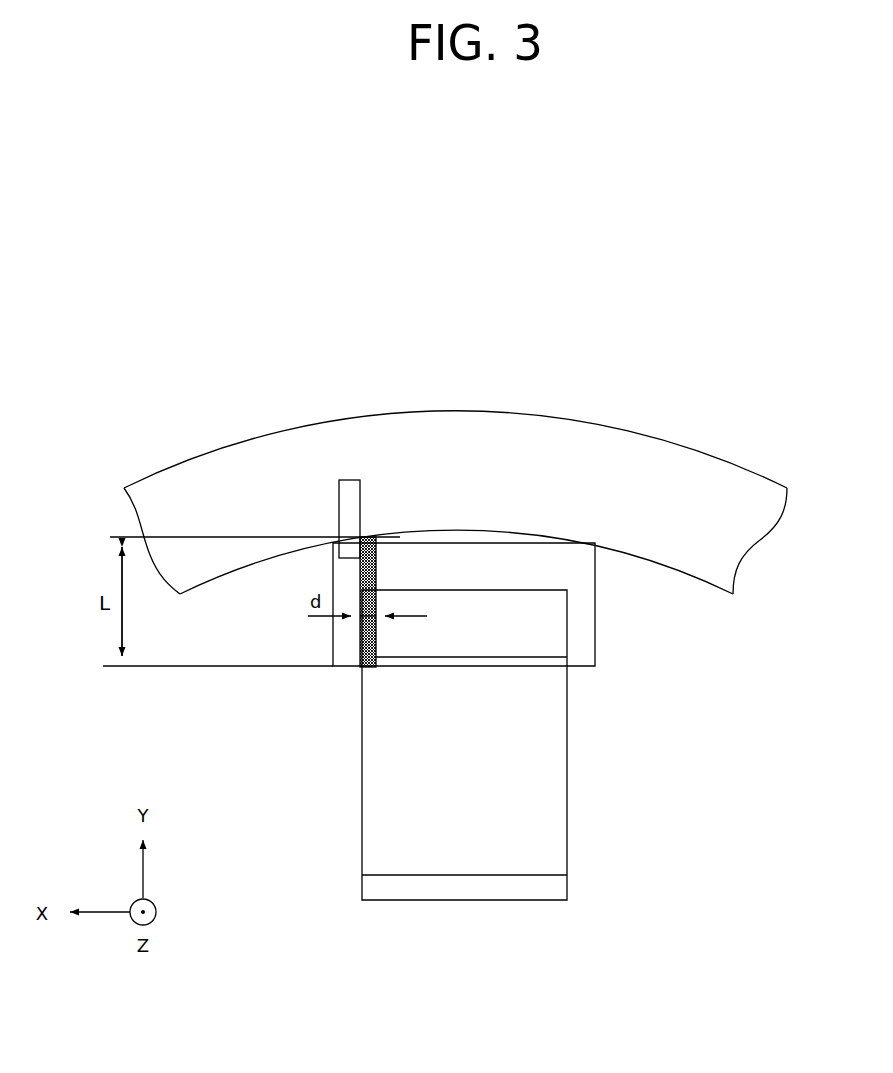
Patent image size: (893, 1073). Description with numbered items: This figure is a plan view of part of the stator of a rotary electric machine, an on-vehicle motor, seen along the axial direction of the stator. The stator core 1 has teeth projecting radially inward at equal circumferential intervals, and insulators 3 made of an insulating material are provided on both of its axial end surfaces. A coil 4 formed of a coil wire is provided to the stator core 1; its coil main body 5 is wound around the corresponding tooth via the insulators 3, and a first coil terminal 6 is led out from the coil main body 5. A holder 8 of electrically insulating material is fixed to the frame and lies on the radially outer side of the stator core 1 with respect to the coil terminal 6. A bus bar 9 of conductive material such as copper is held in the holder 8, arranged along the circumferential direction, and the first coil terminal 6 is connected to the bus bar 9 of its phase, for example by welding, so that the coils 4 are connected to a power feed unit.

The stator core 1 is at (471, 628).
The insulator 3 is at (596, 607).
The coil 4 is at (362, 775).
The coil main body 5 is at (383, 844).
The first coil terminal 6 is at (377, 570).
The holder 8 is at (360, 455).
The bus bar 9 is at (350, 480).